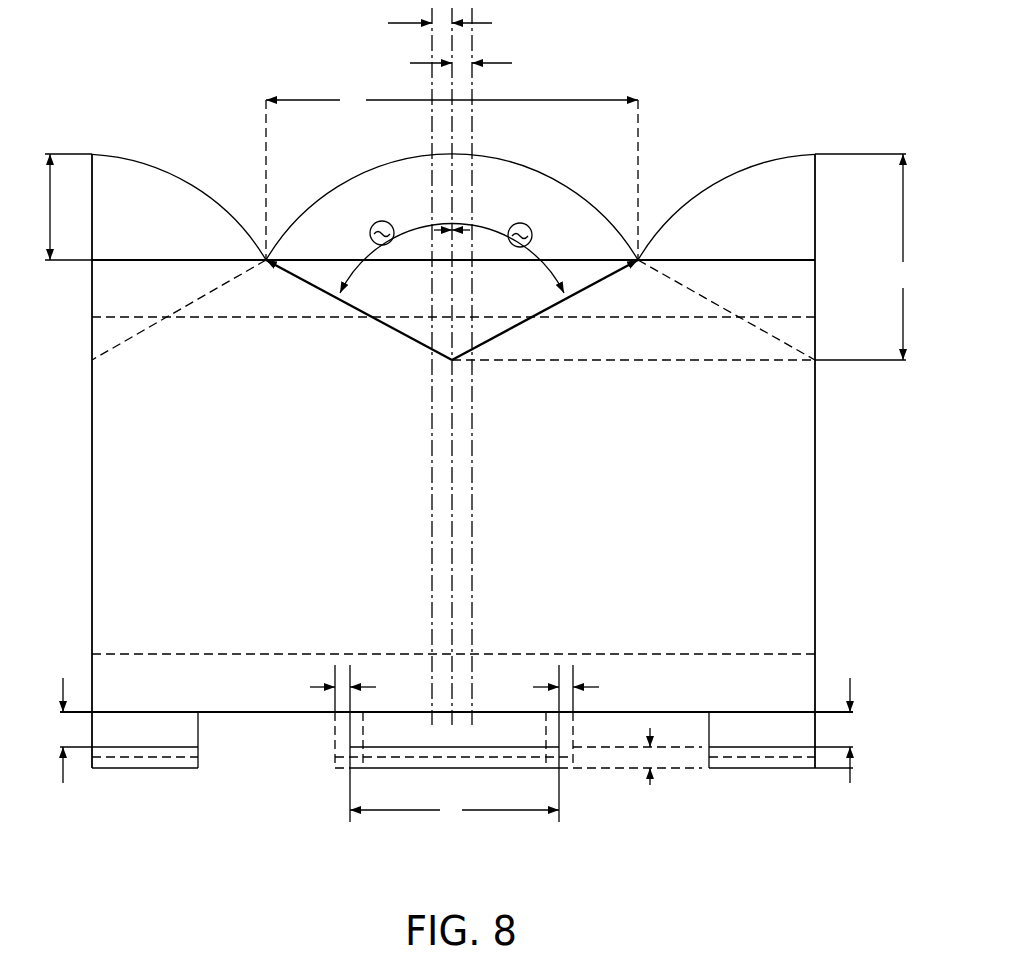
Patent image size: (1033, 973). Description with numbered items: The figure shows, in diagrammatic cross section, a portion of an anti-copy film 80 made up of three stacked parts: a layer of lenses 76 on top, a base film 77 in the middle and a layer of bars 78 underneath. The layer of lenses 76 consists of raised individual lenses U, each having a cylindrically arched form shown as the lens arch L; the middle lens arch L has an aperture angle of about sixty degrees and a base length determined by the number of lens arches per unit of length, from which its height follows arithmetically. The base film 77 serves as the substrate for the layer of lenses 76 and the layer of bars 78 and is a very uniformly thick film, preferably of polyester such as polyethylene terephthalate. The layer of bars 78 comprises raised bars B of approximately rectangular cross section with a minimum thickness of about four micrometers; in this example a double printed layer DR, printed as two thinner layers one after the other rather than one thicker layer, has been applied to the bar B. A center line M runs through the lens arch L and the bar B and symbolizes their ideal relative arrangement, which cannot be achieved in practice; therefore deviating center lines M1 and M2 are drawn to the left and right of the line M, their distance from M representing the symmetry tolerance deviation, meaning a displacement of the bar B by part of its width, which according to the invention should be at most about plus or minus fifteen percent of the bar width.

The layer of lenses 76 is at (845, 154).
The base film 77 is at (845, 652).
The layer of bars 78 is at (880, 654).
The anti-copy film 80 is at (666, 90).
The lens arch L is at (519, 182).
The individual lens U is at (722, 172).
The center line M is at (452, 481).
The deviating center line M1 is at (432, 408).
The deviating center line M2 is at (472, 408).
The bar B is at (533, 728).
The printed layers DR is at (556, 767).